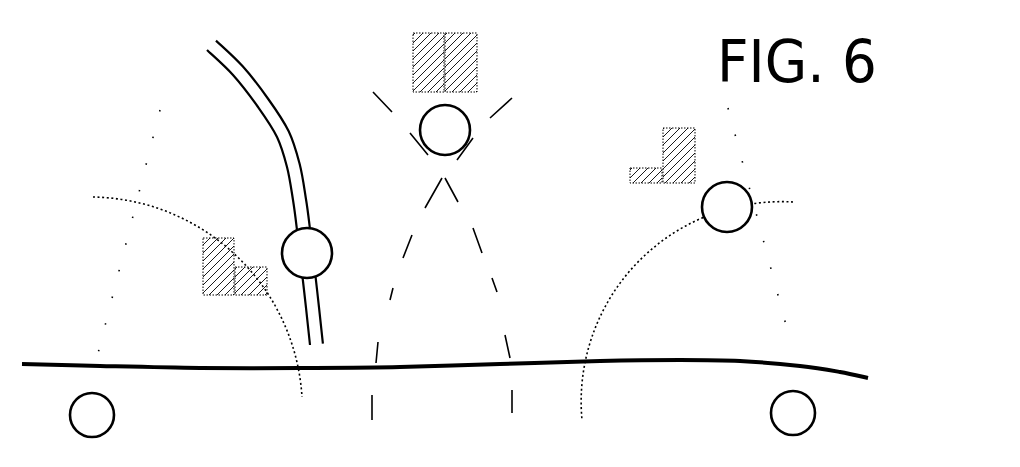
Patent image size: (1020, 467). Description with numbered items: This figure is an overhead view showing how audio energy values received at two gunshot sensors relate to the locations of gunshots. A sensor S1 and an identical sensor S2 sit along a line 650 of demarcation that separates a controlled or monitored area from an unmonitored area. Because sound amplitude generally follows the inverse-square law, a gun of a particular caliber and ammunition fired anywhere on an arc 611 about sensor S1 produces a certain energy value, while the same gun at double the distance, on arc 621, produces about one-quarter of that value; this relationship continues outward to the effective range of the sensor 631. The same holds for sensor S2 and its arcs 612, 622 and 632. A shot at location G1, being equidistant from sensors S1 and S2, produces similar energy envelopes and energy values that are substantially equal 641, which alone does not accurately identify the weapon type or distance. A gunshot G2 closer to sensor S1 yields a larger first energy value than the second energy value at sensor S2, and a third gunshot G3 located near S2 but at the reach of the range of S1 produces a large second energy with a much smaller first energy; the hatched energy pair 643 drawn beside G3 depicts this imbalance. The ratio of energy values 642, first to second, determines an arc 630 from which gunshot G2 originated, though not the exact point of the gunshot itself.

The line of demarcation 650 is at (862, 373).
The arc 630 is at (258, 107).
The arc 632 is at (118, 330).
The arc 612 is at (632, 330).
The arc 621 is at (515, 322).
The arc 622 is at (403, 330).
The arc 611 is at (322, 428).
The effective range of the sensor 631 is at (808, 330).
The substantially equal energy values 641 is at (517, 34).
The ratio of energy values 642 is at (233, 160).
The electrode pair block 643 is at (597, 150).
The gunshot location G1 is at (445, 130).
The gunshot G2 is at (307, 253).
The third gunshot G3 is at (727, 207).
The sensor S1 is at (92, 415).
The sensor S2 is at (793, 413).